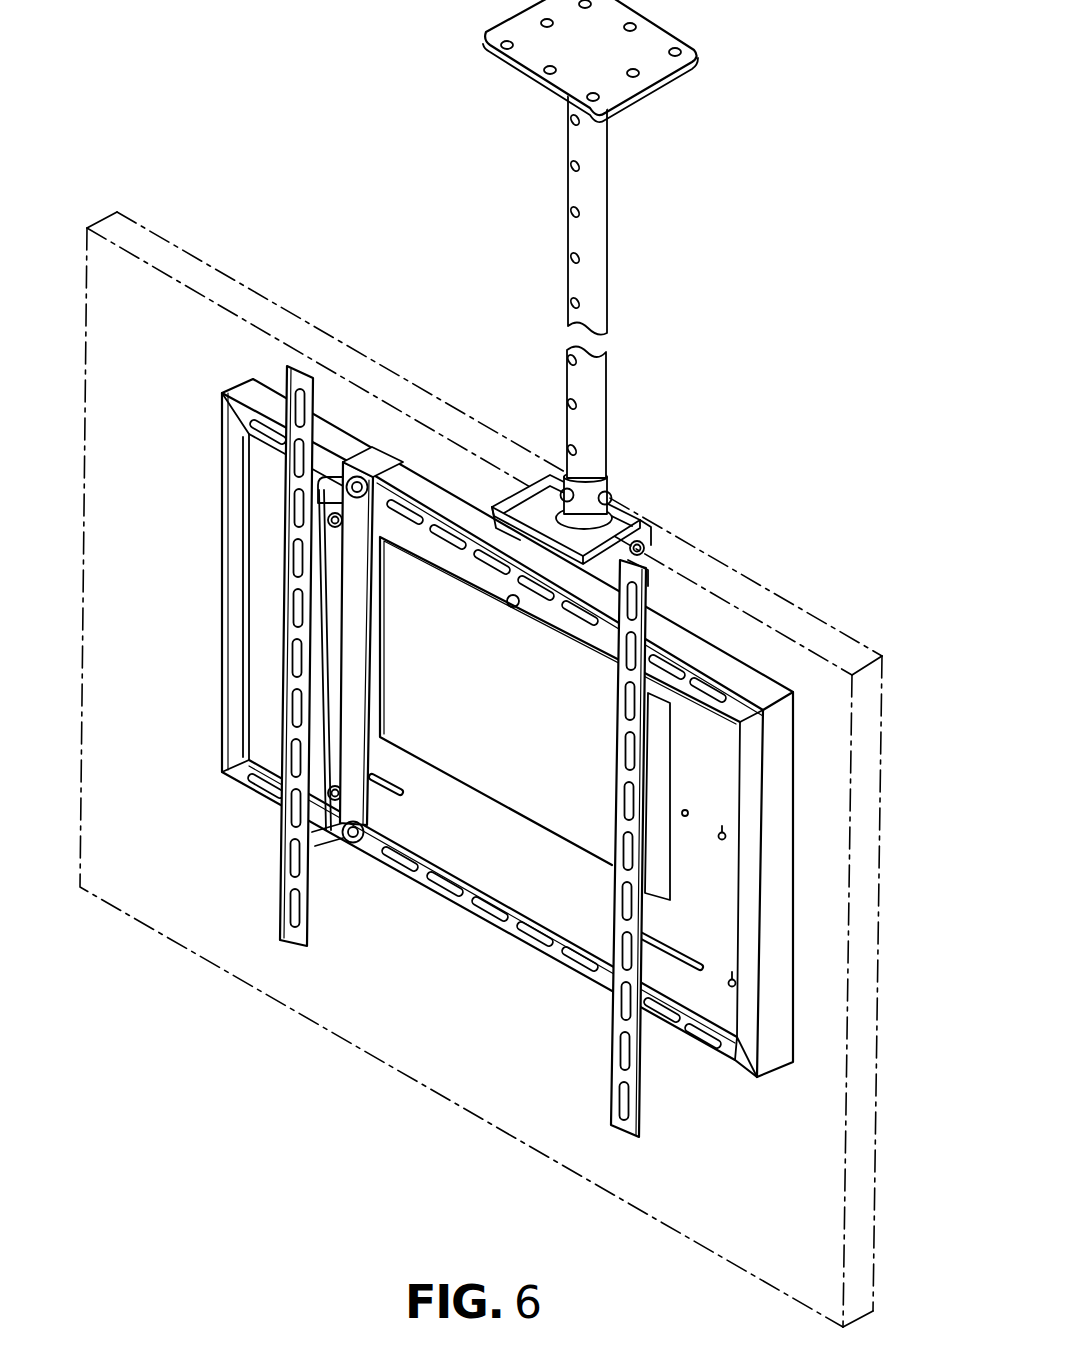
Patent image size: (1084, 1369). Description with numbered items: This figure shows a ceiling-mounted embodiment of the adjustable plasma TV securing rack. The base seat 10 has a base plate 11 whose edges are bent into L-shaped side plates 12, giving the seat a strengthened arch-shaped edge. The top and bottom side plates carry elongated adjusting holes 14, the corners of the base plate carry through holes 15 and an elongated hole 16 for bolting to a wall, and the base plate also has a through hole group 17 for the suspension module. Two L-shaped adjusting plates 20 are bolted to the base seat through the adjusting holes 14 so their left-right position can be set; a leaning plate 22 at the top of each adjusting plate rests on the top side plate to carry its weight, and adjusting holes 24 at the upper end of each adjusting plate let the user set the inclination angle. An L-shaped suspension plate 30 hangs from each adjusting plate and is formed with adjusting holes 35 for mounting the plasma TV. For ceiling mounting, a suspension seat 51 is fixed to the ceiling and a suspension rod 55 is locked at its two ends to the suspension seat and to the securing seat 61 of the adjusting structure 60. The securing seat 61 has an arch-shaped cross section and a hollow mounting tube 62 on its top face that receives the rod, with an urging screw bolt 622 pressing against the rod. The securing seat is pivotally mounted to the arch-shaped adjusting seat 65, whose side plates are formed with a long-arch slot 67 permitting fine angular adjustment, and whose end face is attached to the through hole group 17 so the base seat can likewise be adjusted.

The base seat 10 is at (457, 920).
The base plate 11 is at (513, 892).
The side plate 12 is at (430, 893).
The adjusting hole 14 is at (575, 975).
The through hole 15 is at (730, 988).
The elongated hole 16 is at (680, 968).
The through hole group 17 is at (722, 842).
The adjusting plate 20 is at (343, 642).
The leaning plate 22 is at (370, 455).
The adjusting hole 24 is at (327, 520).
The suspension plate 30 is at (285, 674).
The adjusting hole 35 is at (296, 603).
The suspension seat 51 is at (657, 78).
The suspension rod 55 is at (607, 230).
The adjusting structure 60 is at (654, 481).
The securing seat 61 is at (647, 523).
The mounting tube 62 is at (608, 482).
The urging screw bolt 622 is at (613, 497).
The adjusting seat 65 is at (497, 500).
The long-arch slot 67 is at (652, 545).